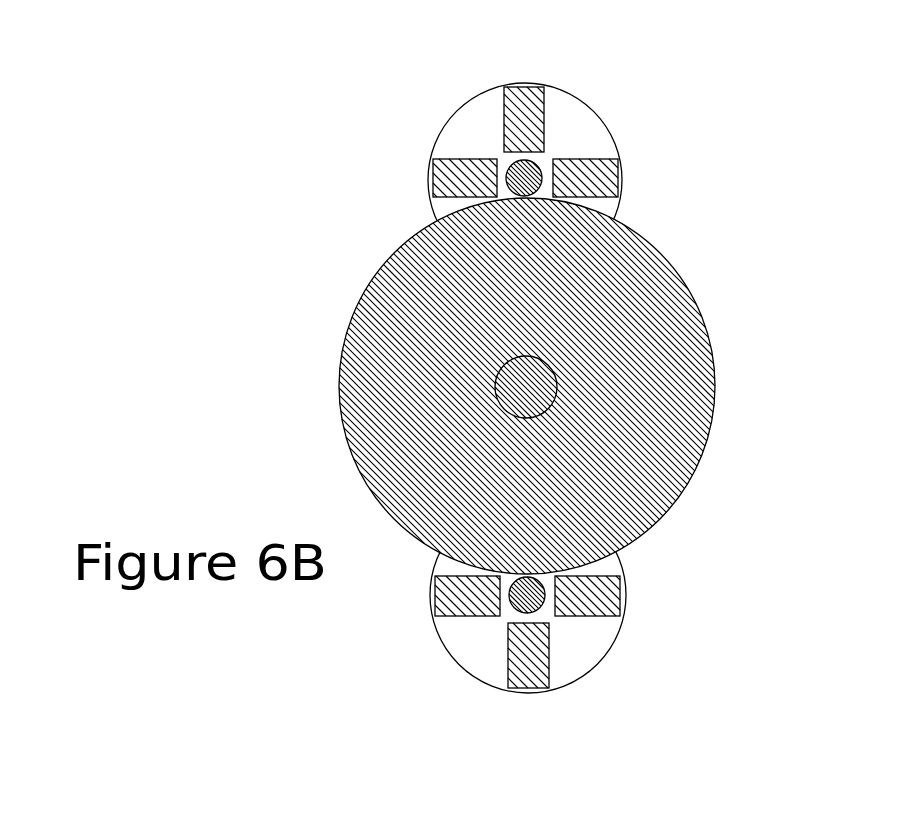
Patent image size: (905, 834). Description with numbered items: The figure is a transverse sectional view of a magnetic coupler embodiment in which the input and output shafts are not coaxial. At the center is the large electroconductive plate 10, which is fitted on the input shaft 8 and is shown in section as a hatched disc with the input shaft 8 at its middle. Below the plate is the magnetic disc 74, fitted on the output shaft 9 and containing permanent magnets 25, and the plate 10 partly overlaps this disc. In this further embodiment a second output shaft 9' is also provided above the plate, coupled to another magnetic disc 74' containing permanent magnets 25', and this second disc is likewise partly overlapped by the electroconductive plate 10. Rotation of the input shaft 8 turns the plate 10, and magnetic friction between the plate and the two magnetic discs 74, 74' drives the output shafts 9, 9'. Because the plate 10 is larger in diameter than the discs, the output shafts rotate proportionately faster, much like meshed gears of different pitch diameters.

The electroconductive plate 10 is at (682, 280).
The input shaft 8 is at (562, 383).
The second output shaft 9' is at (597, 119).
The output shaft 9 is at (576, 655).
The permanent magnets 25' is at (414, 137).
The permanent magnets 25 is at (404, 648).
The second magnetic disc 74' is at (429, 180).
The magnetic disc unit 74 is at (599, 595).